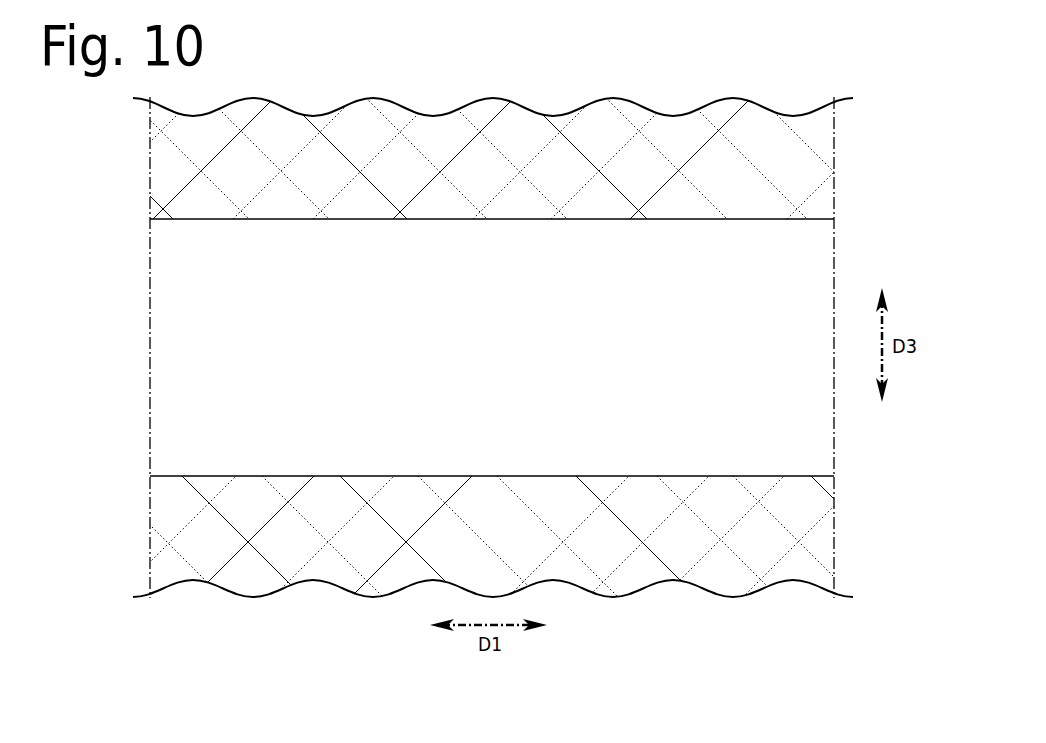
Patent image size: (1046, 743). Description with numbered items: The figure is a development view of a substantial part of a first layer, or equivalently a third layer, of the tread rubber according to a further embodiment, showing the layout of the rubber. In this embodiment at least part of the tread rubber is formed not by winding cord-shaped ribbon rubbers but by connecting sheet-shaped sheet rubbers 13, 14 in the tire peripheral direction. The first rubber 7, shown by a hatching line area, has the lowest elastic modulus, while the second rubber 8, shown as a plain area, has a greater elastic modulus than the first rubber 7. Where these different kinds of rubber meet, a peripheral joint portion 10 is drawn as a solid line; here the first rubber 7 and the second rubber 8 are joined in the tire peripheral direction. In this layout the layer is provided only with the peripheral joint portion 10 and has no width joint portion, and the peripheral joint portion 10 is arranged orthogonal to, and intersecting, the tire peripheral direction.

The sheet rubber 13 is at (167, 175).
The sheet rubber 14 is at (167, 340).
The first rubber 7 is at (813, 200).
The second rubber 8 is at (813, 445).
The peripheral joint portion 10 is at (362, 219).